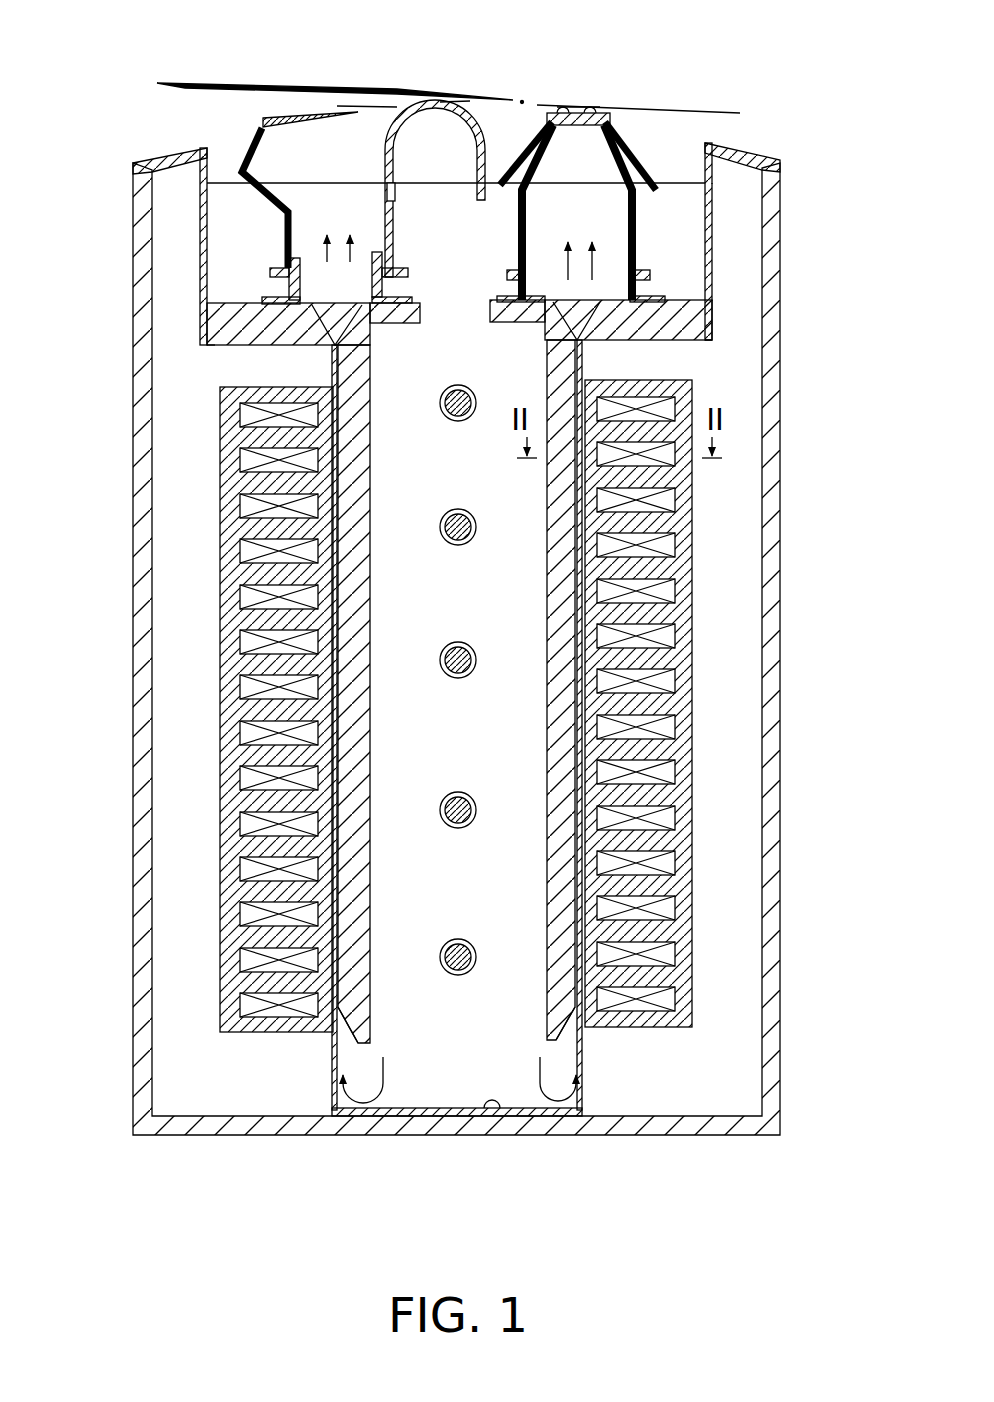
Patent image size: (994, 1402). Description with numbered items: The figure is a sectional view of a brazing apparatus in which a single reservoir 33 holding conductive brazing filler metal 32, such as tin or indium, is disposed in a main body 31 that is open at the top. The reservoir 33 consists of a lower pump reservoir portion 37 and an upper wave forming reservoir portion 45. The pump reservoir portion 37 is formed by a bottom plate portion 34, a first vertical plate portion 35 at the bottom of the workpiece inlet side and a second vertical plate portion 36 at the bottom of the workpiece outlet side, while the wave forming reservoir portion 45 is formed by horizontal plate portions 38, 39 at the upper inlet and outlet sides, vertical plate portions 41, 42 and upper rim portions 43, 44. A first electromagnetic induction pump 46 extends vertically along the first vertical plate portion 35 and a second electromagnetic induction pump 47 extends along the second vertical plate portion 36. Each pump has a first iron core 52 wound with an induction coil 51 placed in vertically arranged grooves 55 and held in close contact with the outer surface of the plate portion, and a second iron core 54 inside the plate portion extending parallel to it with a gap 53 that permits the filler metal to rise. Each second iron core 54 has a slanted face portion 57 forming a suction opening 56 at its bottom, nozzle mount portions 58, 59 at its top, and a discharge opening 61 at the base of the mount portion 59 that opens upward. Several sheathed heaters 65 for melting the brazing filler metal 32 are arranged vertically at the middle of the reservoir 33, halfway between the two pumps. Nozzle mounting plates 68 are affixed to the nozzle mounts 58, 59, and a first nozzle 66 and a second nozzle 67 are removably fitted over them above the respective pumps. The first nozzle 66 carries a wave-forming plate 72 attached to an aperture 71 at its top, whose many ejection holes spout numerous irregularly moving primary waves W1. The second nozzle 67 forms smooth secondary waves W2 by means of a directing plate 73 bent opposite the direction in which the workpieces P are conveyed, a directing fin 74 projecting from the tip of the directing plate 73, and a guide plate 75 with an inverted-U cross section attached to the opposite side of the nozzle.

The main body 31 is at (782, 428).
The conductive brazing filler metal 32 is at (681, 173).
The reservoir 33 is at (712, 218).
The bottom plate portion 34 is at (490, 1110).
The first vertical plate portion 35 is at (592, 1078).
The second vertical plate portion 36 is at (330, 1115).
The pump reservoir portion 37 is at (445, 1065).
The horizontal plate portion 38 is at (692, 342).
The horizontal plate portion 39 is at (213, 352).
The vertical plate portion 41 is at (713, 312).
The vertical plate portion 42 is at (202, 228).
The upper rim portion 43 is at (745, 150).
The upper rim portion 44 is at (163, 157).
The wave forming reservoir portion 45 is at (680, 253).
The first electromagnetic induction pump 46 is at (577, 703).
The second electromagnetic induction pump 47 is at (205, 709).
The induction coil 51 is at (245, 688).
The first iron core 52 is at (232, 712).
The gap 53 is at (337, 732).
The second iron core 54 is at (350, 623).
The grooves 55 is at (320, 692).
The suction opening 56 is at (334, 1062).
The slanted face portion 57 is at (334, 1040).
The nozzle mount portion 58 is at (398, 322).
The nozzle mount portion 59 is at (263, 318).
The discharge opening 61 is at (338, 322).
The heaters 65 is at (440, 415).
The first nozzle 66 is at (596, 150).
The second nozzle 67 is at (444, 152).
The nozzle mounting plate 68 is at (287, 283).
The aperture 71 is at (584, 133).
The wave-forming plate 72 is at (608, 133).
The directing plate 73 is at (253, 150).
The directing fin 74 is at (313, 115).
The guide plate 75 is at (413, 113).
The workpieces P is at (197, 82).
The primary waves W1 is at (557, 107).
The secondary waves W2 is at (470, 100).